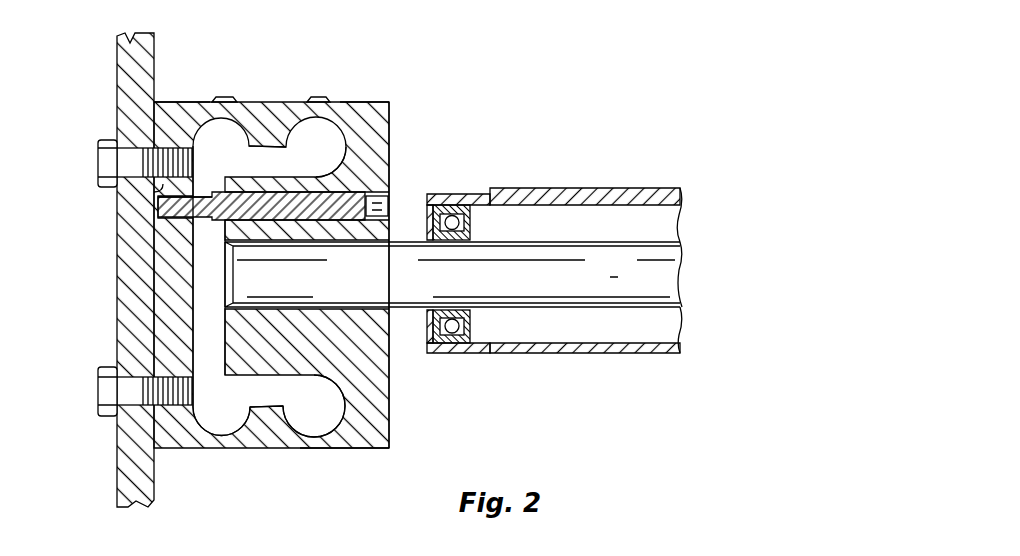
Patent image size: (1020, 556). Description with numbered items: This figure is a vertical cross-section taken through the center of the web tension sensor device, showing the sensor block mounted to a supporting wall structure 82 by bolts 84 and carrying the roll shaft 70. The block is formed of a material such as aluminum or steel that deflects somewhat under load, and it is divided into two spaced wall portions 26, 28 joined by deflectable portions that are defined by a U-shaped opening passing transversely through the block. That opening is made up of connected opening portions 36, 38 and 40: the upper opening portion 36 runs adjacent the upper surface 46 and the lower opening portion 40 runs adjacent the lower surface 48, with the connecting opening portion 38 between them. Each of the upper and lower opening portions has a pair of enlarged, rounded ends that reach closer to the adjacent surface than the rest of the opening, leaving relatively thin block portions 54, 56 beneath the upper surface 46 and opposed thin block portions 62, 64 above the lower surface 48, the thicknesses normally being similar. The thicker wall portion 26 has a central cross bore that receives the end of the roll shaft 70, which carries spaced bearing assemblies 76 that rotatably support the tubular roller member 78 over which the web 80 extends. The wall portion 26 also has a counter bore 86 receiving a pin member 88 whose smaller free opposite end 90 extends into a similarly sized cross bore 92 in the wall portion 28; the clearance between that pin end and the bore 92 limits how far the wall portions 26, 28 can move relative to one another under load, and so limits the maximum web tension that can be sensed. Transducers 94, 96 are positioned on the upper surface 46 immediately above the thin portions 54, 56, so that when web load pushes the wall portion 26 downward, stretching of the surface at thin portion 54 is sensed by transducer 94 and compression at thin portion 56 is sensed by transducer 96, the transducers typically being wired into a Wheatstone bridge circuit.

The wall portion 26 is at (378, 397).
The wall portion 28 is at (178, 340).
The upper opening portion 36 is at (277, 120).
The opening portion 38 is at (207, 267).
The lower opening portion 40 is at (273, 393).
The upper surface 46 is at (378, 102).
The lower surface 48 is at (360, 450).
The thin block portion 54 is at (197, 102).
The thin block portion 56 is at (297, 102).
The thin block portion 62 is at (220, 441).
The thin block portion 64 is at (318, 437).
The roll shaft 70 is at (412, 292).
The bearing assemblies 76 is at (480, 228).
The tubular roller member 78 is at (466, 196).
The web 80 is at (574, 188).
The supporting wall structure 82 is at (138, 298).
The bolts 84 is at (97, 162).
The counter bore 86 is at (380, 206).
The pin member 88 is at (380, 193).
The free opposite end 90 is at (117, 216).
The cross bore 92 is at (117, 195).
The transducer 94 is at (222, 97).
The transducer 96 is at (318, 102).